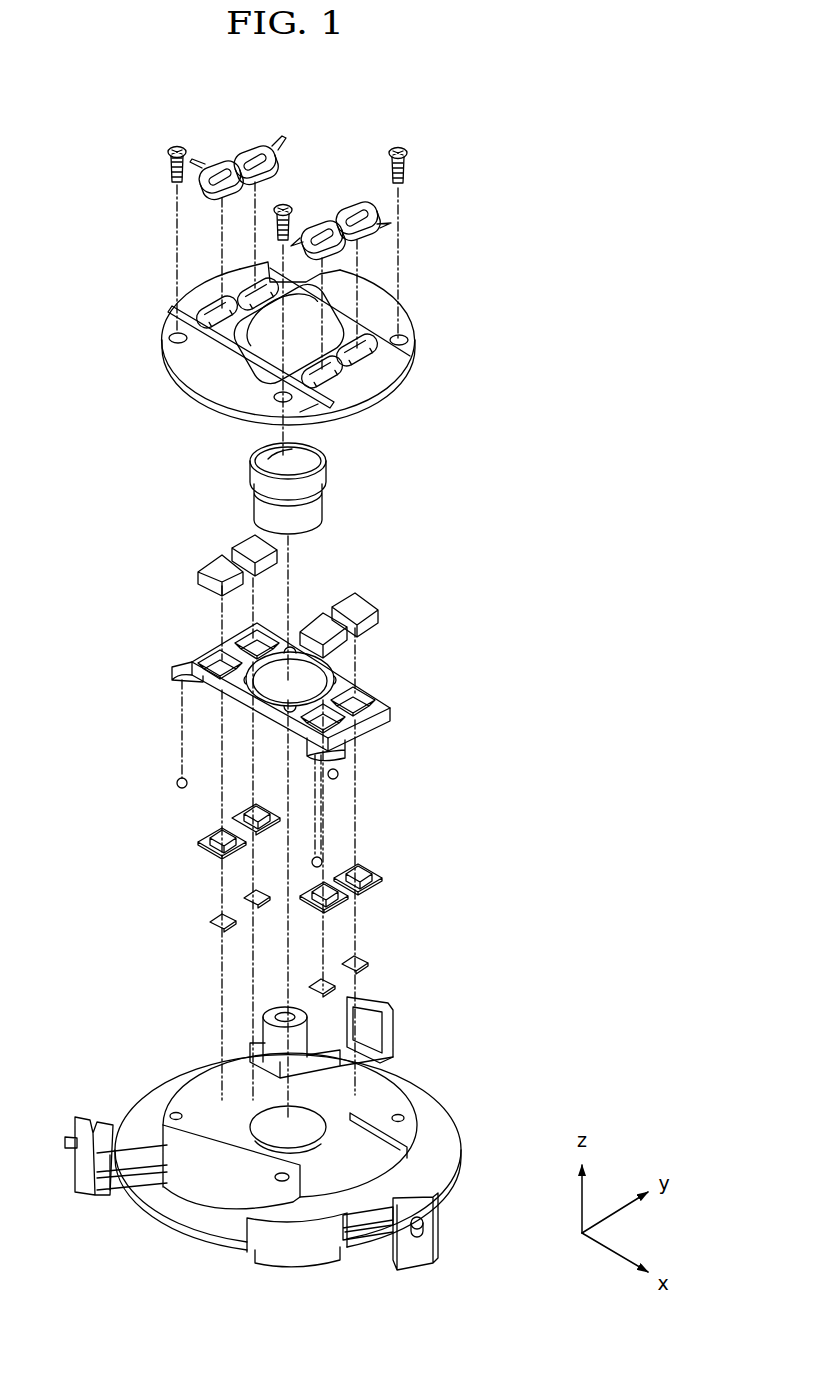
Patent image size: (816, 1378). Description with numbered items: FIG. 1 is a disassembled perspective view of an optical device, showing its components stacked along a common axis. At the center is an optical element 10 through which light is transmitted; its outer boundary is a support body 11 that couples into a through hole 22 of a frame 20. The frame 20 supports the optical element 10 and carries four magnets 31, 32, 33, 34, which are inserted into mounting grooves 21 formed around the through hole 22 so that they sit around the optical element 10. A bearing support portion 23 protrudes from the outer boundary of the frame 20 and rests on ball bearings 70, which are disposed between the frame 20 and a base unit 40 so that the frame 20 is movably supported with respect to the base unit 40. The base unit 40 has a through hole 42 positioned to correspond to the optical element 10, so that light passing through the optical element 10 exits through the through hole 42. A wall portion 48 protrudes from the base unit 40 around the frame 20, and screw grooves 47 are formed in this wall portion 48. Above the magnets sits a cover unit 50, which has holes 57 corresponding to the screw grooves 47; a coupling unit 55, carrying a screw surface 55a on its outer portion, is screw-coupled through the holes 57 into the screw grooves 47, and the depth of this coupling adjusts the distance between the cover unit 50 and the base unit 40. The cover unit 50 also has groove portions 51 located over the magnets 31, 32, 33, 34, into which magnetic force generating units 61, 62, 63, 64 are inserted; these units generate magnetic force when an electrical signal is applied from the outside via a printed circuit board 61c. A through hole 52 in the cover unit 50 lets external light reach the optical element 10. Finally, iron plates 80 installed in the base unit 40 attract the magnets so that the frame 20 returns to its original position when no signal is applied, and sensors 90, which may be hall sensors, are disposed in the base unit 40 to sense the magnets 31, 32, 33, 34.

The optical element 10 is at (262, 458).
The support body 11 is at (252, 484).
The frame 20 is at (317, 696).
The mounting grooves 21 is at (388, 708).
The through hole 22 is at (250, 675).
The bearing support portion 23 is at (180, 662).
The magnet 31 is at (242, 545).
The magnet 32 is at (340, 637).
The magnet 33 is at (210, 570).
The magnet 34 is at (366, 602).
The base unit 40 is at (321, 1133).
The through hole 42 is at (270, 1125).
The screw grooves 47 is at (172, 1114).
The wall portion 48 is at (235, 1160).
The cover unit 50 is at (304, 350).
The groove portions 51 is at (240, 312).
The through hole 52 is at (230, 345).
The coupling unit 55 is at (172, 148).
The screw surface 55a is at (170, 172).
The holes 57 is at (305, 410).
The magnetic force generating unit 61 is at (258, 148).
The printed circuit board 61c is at (283, 136).
The magnetic force generating unit 62 is at (322, 228).
The magnetic force generating unit 63 is at (216, 162).
The magnetic force generating unit 64 is at (352, 204).
The ball bearings 70 is at (176, 782).
The iron plates 80 is at (216, 918).
The sensors 90 is at (375, 888).